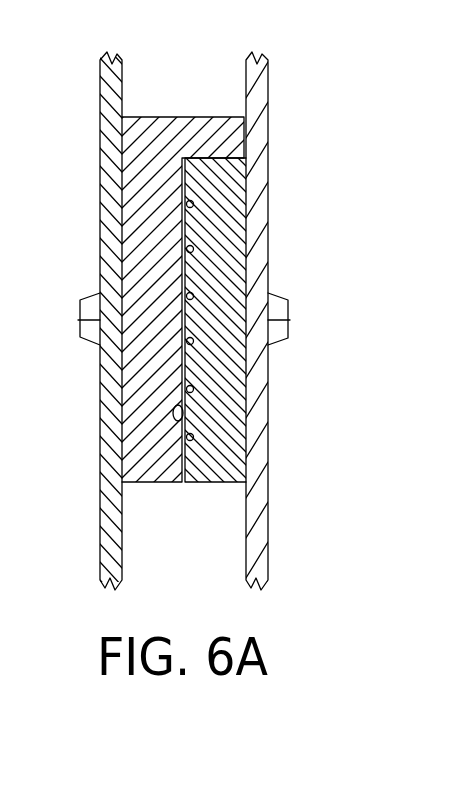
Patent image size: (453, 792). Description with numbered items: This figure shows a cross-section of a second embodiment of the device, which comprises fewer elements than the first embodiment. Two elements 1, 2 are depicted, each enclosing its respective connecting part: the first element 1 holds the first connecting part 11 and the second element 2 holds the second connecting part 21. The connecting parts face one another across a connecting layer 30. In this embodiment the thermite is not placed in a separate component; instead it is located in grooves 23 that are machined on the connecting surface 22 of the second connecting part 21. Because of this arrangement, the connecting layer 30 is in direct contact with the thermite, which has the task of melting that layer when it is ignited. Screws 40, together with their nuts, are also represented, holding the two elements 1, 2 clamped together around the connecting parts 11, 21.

The first element 1 is at (112, 143).
The second element 2 is at (256, 512).
The first connecting part 11 is at (150, 246).
The second connecting part 21 is at (232, 380).
The connecting surface 22 is at (186, 427).
The grooves 23 is at (194, 446).
The connecting layer 30 is at (187, 223).
The screws 40 is at (273, 306).